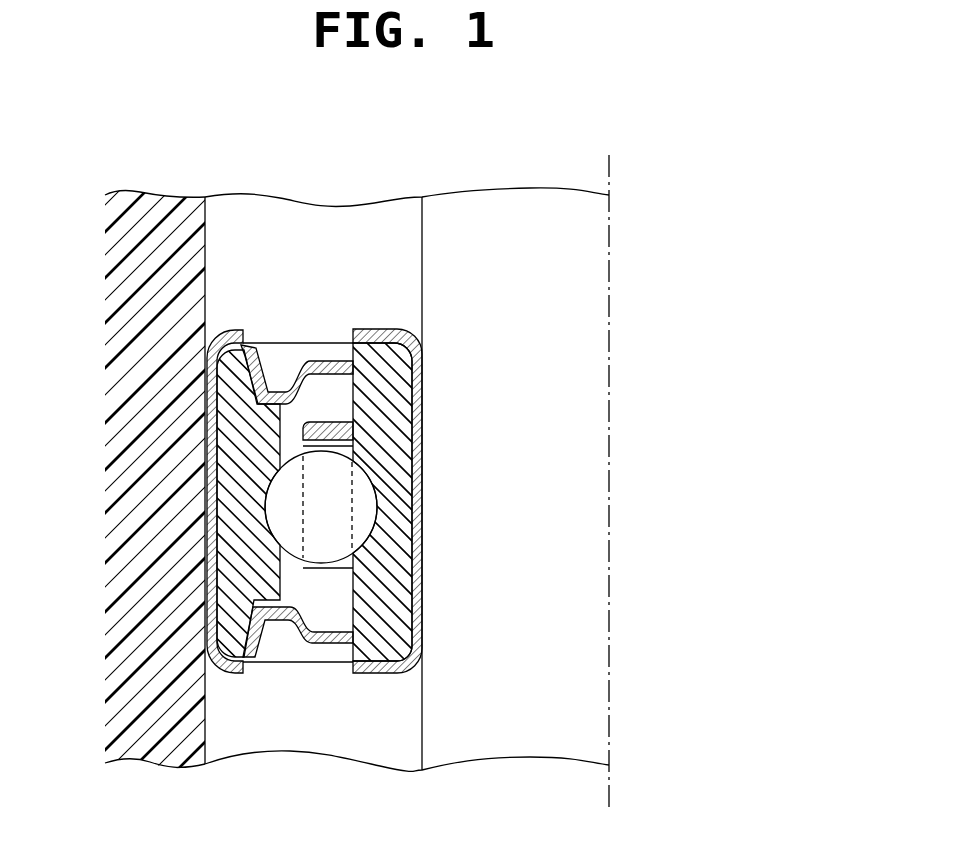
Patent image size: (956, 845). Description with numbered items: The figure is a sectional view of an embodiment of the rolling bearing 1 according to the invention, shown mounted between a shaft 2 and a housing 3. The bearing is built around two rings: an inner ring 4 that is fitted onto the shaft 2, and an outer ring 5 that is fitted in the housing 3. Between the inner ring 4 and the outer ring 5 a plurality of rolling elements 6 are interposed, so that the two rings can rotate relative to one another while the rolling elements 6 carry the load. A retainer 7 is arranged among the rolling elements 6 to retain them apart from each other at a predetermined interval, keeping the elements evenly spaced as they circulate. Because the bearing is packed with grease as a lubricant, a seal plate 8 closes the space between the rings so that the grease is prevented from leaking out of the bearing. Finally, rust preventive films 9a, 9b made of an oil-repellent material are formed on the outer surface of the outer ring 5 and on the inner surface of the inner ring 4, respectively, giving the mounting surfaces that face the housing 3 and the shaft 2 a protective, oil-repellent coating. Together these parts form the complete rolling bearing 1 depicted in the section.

The rolling bearing 1 is at (338, 342).
The shaft 2 is at (486, 210).
The housing 3 is at (157, 215).
The inner ring 4 is at (388, 440).
The outer ring 5 is at (232, 352).
The rolling elements 6 is at (360, 507).
The retainer 7 is at (331, 420).
The seal plate 8 is at (304, 352).
The rust preventive film 9a is at (422, 622).
The rust preventive film 9b is at (207, 608).